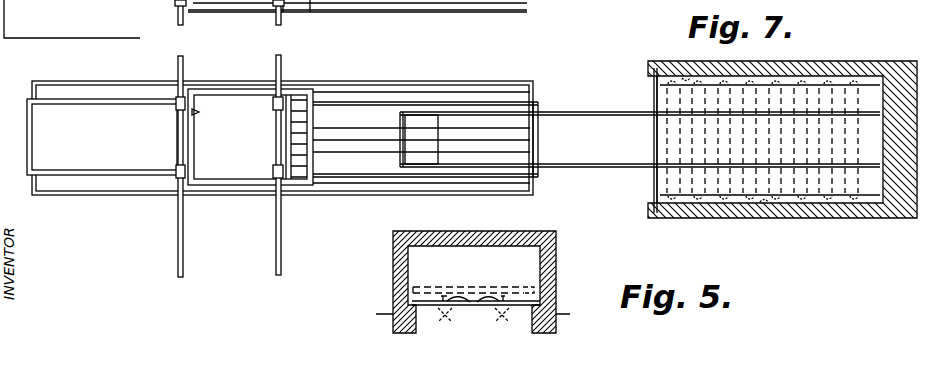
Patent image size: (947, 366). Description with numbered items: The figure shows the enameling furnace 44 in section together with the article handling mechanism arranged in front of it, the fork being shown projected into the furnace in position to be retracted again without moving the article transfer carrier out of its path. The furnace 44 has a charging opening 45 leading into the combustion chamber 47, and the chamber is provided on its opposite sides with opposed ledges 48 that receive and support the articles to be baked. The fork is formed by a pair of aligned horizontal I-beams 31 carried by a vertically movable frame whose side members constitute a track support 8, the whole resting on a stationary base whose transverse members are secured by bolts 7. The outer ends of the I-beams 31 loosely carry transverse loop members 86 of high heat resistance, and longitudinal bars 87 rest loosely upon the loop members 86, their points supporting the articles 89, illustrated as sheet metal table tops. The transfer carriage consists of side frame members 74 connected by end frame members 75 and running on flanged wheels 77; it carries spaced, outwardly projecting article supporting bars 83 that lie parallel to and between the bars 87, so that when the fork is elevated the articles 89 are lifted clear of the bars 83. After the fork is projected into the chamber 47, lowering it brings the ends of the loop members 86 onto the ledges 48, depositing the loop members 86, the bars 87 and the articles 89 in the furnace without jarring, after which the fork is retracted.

In FIG. 7, the bolts 7 is at (73, 81).
In FIG. 7, the track support 8 is at (112, 100).
In FIG. 7, the side frame members 74 is at (245, 12).
In FIG. 7, the end frame members 75 is at (186, 139).
In FIG. 7, the flanged wheels 77 is at (177, 168).
In FIG. 7, the article supporting bars 83 is at (388, 128).
In FIG. 7, the I-beams 31 is at (610, 115).
In FIG. 5, the I-beams 31 is at (499, 314).
In FIG. 7, the enameling furnace 44 is at (848, 58).
In FIG. 5, the enameling furnace 44 is at (462, 233).
In FIG. 7, the charging opening 45 is at (655, 181).
In FIG. 7, the combustion chamber 47 is at (857, 140).
In FIG. 5, the combustion chamber 47 is at (468, 275).
In FIG. 7, the ledges 48 is at (685, 79).
In FIG. 5, the ledges 48 is at (470, 318).
In FIG. 7, the loop members 86 is at (789, 76).
In FIG. 5, the loop members 86 is at (429, 300).
In FIG. 5, the bars 87 is at (473, 310).
In FIG. 5, the articles 89 is at (513, 289).